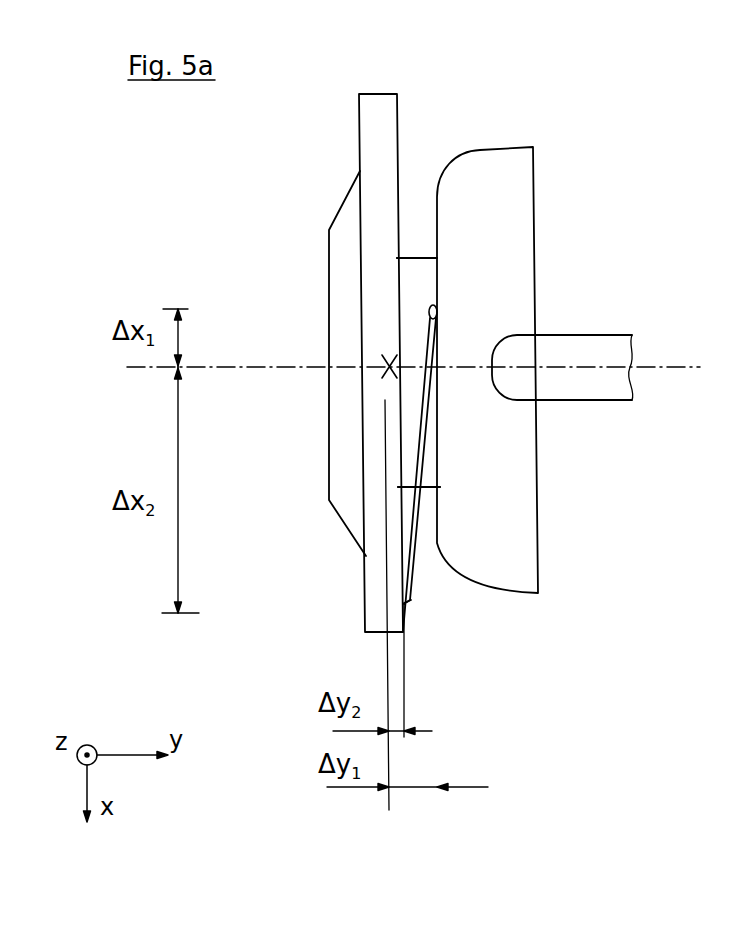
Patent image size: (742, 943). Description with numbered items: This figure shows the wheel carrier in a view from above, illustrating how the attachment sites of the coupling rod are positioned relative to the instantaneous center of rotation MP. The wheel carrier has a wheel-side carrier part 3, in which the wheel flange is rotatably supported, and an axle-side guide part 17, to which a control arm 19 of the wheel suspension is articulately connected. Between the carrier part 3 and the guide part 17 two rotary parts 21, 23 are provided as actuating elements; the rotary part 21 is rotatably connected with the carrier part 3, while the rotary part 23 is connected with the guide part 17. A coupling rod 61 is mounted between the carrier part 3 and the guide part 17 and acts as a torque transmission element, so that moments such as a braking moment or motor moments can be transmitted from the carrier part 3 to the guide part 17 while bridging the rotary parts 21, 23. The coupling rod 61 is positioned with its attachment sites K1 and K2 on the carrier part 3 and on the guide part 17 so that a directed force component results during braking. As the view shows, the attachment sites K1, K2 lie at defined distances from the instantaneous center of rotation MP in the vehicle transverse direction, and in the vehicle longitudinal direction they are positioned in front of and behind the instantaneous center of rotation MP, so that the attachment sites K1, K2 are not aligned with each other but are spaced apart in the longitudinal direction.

The carrier part 3 is at (380, 94).
The rotary part 21 is at (415, 258).
The rotary part 23 is at (415, 258).
The guide part 17 is at (534, 165).
The control arm 19 is at (615, 333).
The coupling rod 61 is at (427, 435).
The attachment site K1 is at (436, 312).
The attachment site K2 is at (403, 613).
The instantaneous center of rotation MP is at (386, 364).